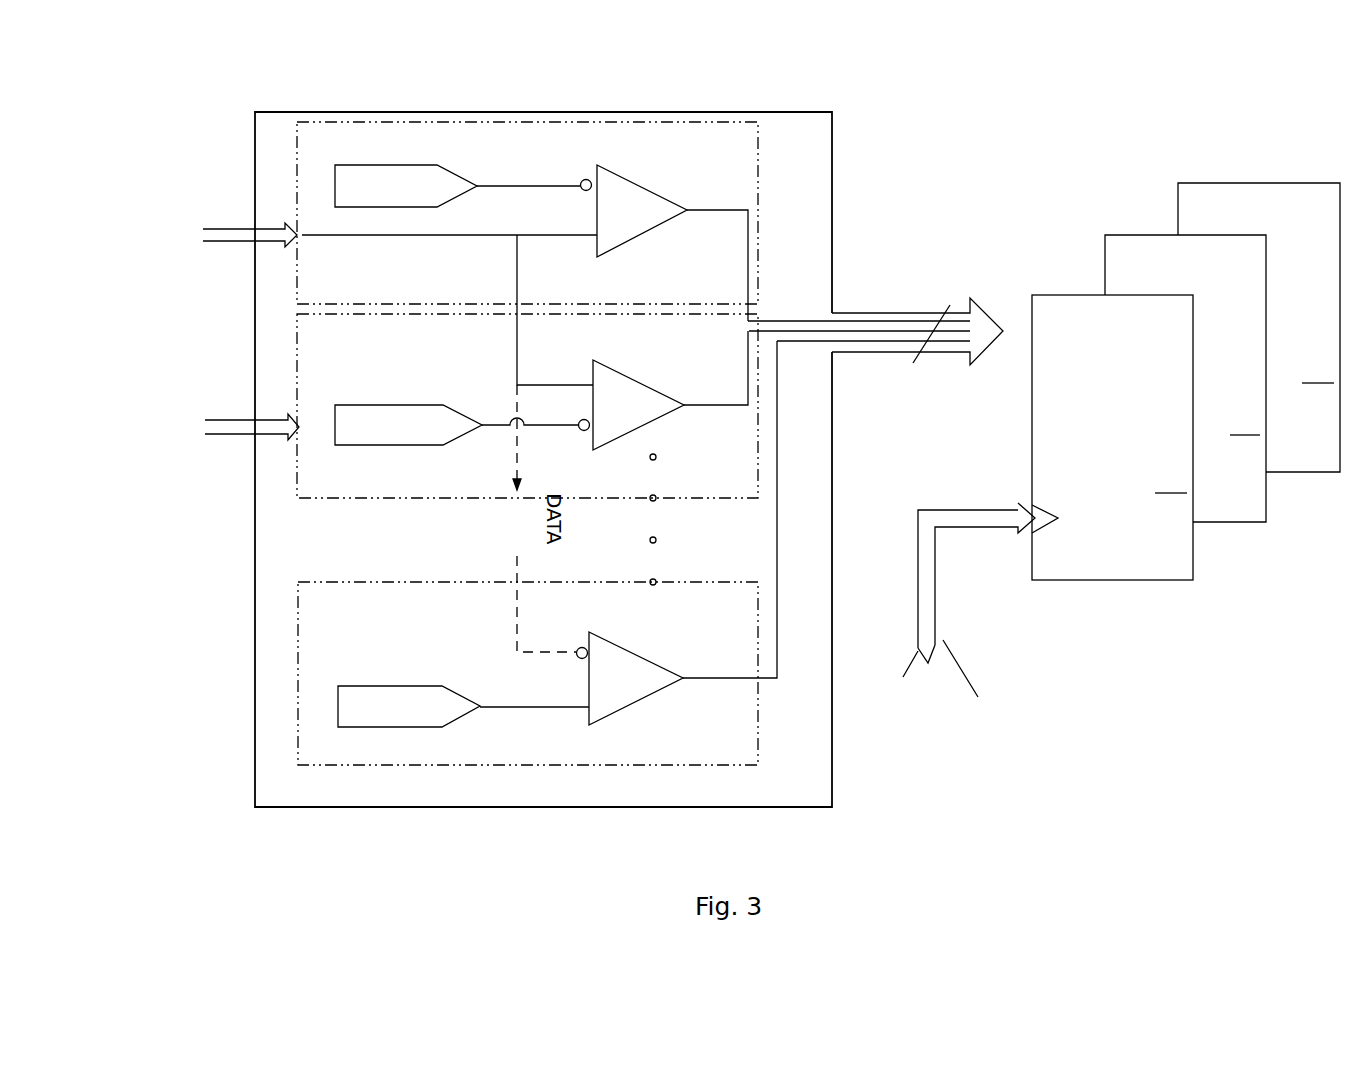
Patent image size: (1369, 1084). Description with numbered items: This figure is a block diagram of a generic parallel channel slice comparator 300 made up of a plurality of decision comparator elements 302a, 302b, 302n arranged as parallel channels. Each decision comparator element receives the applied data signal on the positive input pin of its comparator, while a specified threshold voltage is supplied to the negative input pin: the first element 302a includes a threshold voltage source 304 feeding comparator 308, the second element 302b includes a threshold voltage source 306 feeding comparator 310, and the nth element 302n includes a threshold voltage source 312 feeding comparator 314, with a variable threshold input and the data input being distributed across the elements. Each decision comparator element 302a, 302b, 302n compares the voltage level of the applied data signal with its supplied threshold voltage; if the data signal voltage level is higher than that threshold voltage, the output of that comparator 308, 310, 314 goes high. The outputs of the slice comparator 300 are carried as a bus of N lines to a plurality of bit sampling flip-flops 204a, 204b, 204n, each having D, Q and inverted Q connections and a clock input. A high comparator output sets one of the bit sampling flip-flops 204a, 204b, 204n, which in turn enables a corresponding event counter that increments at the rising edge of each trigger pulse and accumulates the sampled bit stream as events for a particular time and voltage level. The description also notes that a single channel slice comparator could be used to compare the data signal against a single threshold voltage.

The parallel channel slice comparator 300 is at (312, 112).
The decision comparator element 302a is at (362, 122).
The decision comparator element 302b is at (297, 377).
The decision comparator element 302n is at (353, 582).
The first threshold voltage VT1 304 is at (388, 165).
The second threshold voltage VT2 306 is at (390, 405).
The nth threshold voltage VTN 312 is at (405, 686).
The first comparator 308 is at (637, 180).
The second comparator 310 is at (628, 370).
The nth comparator 314 is at (630, 650).
The bit sampling flip-flop 204a is at (1090, 295).
The bit sampling flip-flop 204b is at (1152, 235).
The bit sampling flip-flop 204n is at (1232, 183).